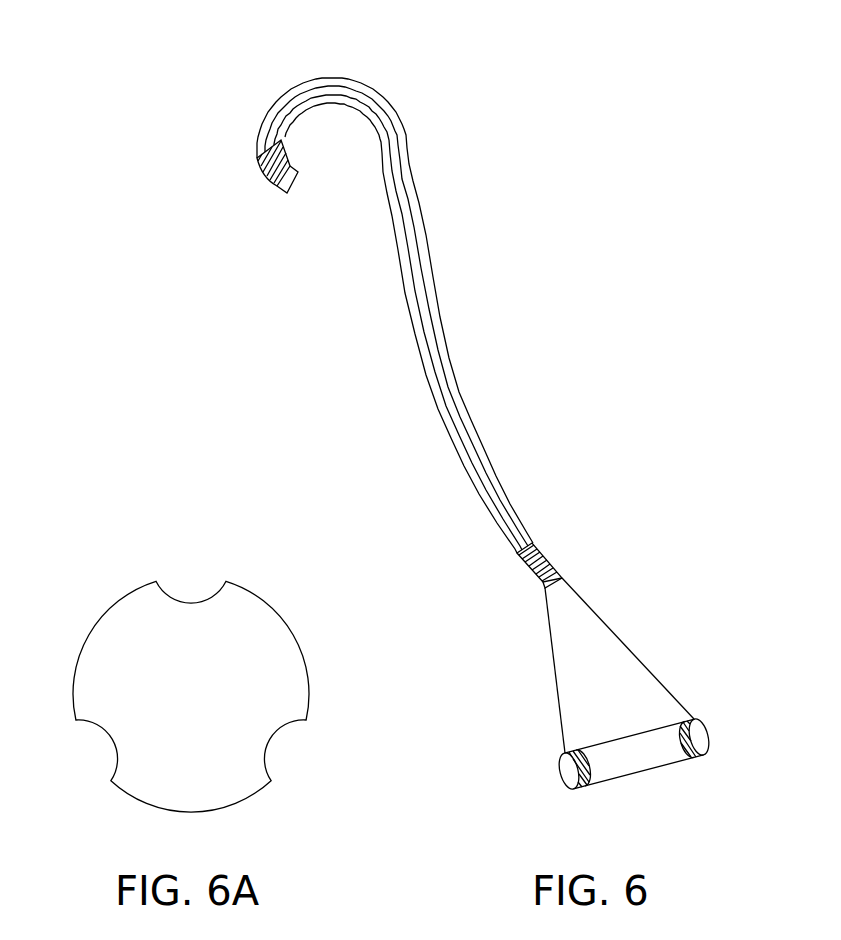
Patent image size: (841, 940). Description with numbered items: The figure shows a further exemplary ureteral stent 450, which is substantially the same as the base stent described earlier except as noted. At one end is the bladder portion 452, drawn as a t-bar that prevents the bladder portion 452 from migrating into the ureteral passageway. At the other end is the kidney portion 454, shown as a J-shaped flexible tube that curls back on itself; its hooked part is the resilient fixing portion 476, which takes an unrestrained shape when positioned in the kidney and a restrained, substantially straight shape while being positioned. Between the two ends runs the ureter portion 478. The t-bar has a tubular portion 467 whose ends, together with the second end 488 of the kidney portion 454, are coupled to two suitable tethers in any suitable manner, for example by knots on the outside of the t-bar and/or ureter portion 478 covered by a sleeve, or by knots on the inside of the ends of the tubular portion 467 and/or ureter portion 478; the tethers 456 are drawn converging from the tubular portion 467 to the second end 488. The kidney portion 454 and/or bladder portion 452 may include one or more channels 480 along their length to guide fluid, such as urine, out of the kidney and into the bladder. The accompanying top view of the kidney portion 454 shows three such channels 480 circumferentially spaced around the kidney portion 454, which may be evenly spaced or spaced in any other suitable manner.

In FIG. 6, the ureteral stent 450 is at (573, 282).
In FIG. 6, the bladder portion 452 is at (700, 697).
In FIG. 6, the kidney portion 454 is at (447, 172).
In FIG. 6, the tether lines 456 is at (615, 628).
In FIG. 6, the tubular portion 467 is at (643, 770).
In FIG. 6, the resilient fixing portion 476 is at (277, 100).
In FIG. 6, the ureter portion 478 is at (485, 473).
In FIG. 6, the channels 480 is at (444, 446).
In FIG. 6A, the channels 480 is at (182, 603).
In FIG. 6, the second end 488 is at (533, 581).